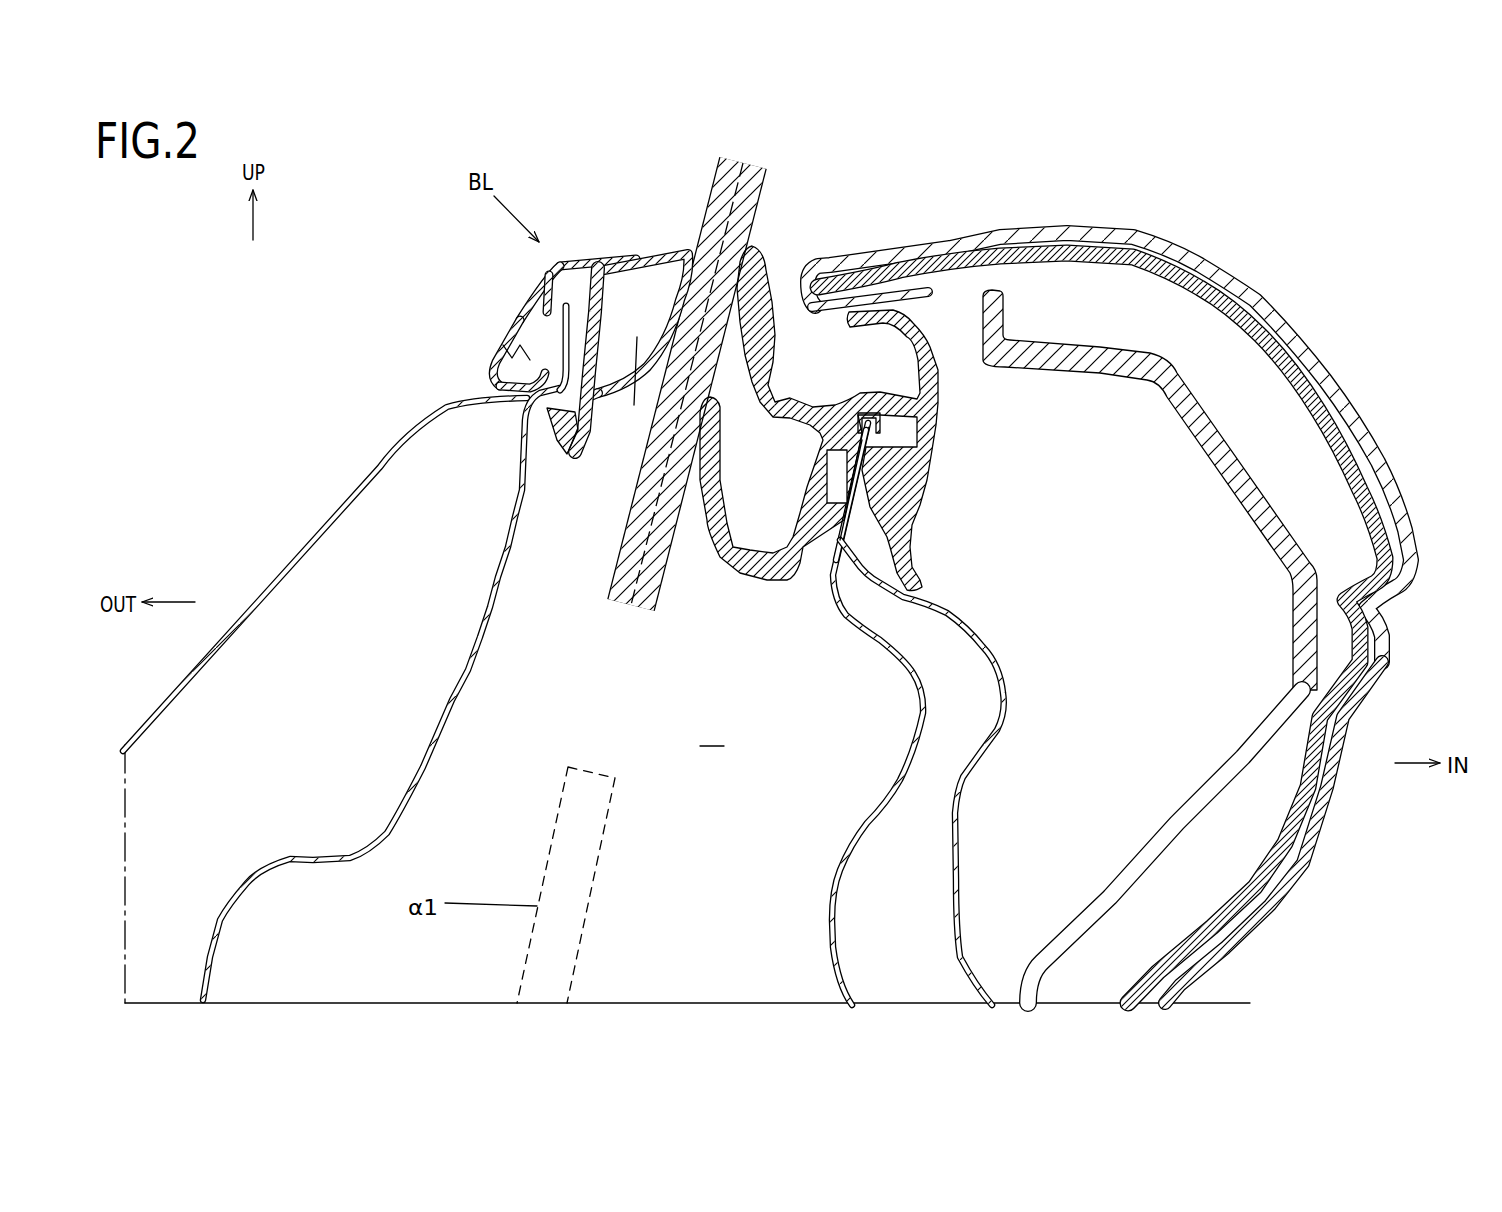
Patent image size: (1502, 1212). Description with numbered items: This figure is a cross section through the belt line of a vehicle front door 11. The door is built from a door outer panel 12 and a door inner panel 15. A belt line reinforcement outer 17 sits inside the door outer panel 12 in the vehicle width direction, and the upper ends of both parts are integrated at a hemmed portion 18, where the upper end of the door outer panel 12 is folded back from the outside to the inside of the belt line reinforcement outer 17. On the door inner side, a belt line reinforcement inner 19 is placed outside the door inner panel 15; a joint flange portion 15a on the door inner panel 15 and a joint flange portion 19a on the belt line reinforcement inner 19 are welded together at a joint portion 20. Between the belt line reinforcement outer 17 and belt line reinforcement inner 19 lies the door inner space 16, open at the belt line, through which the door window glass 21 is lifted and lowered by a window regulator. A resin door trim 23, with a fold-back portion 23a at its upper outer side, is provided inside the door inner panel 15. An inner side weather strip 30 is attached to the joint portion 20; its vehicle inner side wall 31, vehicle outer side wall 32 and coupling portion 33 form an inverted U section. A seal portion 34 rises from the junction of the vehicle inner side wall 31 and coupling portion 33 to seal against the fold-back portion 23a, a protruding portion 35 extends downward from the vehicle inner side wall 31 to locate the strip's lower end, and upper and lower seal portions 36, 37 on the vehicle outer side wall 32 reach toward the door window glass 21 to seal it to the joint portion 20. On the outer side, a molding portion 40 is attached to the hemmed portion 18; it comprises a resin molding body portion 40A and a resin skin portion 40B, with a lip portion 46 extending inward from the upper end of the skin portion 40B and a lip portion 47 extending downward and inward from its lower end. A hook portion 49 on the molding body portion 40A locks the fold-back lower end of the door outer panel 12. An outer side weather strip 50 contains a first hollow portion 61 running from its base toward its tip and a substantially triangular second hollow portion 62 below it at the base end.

The front door 11 is at (344, 642).
The door outer panel 12 is at (310, 545).
The door inner panel 15 is at (1008, 688).
The joint flange portion 15a is at (864, 483).
The door inner space 16 is at (712, 733).
The belt line reinforcement outer 17 is at (466, 700).
The hemmed portion 18 is at (554, 331).
The belt line reinforcement inner 19 is at (889, 812).
The joint flange portion 19a is at (846, 472).
The joint portion 20 is at (884, 431).
The door window glass 21 is at (710, 190).
The door trim 23 is at (1141, 226).
The fold-back portion 23a is at (873, 273).
The inner side weather strip 30 is at (838, 410).
The vehicle inner side wall 31 is at (925, 464).
The vehicle outer side wall 32 is at (797, 516).
The coupling portion 33 is at (878, 391).
The seal portion 34 is at (917, 331).
The protruding portion 35 is at (918, 572).
The upper seal portion 36 is at (774, 278).
The lower seal portion 37 is at (696, 525).
The molding portion 40 is at (546, 323).
The molding body portion 40A is at (537, 287).
The skin portion 40B is at (505, 334).
The lip portion 46 is at (616, 258).
The lip portion 47 is at (495, 378).
The hook portion 49 is at (553, 428).
The outer side weather strip 50 is at (661, 247).
The first hollow portion 61 is at (640, 345).
The second hollow portion 62 is at (603, 398).